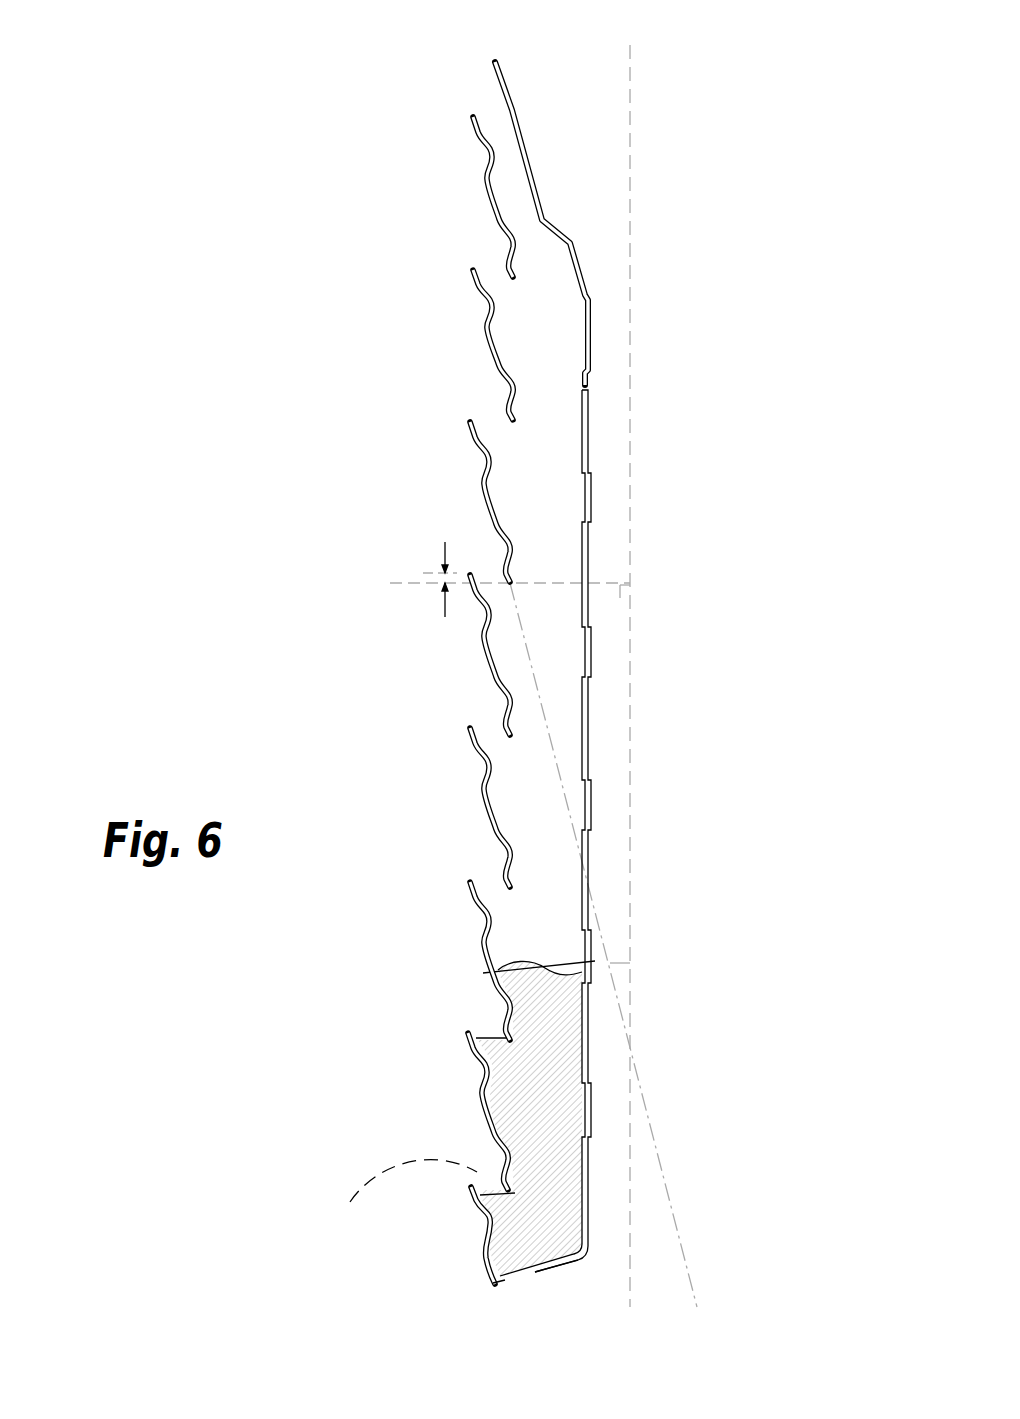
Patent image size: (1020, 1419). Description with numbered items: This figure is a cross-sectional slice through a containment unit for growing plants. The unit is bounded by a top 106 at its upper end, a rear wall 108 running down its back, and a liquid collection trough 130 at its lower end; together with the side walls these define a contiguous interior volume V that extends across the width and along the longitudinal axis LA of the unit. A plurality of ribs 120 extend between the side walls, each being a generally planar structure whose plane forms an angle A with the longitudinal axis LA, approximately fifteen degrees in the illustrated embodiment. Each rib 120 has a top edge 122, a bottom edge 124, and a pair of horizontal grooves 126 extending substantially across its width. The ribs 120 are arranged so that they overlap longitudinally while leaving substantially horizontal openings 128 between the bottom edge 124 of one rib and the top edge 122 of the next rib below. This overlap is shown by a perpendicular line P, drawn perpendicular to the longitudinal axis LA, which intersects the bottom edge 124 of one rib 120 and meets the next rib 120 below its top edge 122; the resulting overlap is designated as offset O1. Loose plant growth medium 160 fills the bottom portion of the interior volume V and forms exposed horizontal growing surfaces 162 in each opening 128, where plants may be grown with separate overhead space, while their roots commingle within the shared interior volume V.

The top 106 is at (483, 62).
The rear wall 108 is at (587, 575).
The ribs 120 is at (487, 198).
The top edge 122 is at (472, 272).
The bottom edge 124 is at (513, 278).
The horizontal grooves 126 is at (485, 157).
The openings 128 is at (492, 272).
The liquid collection trough 130 is at (556, 1272).
The loose plant growth medium 160 is at (555, 1182).
The exposed horizontal growing surfaces 162 is at (404, 1199).
The longitudinal axis LA is at (630, 85).
The interior volume V is at (540, 547).
The perpendicular line P is at (430, 585).
The offset O1 is at (443, 547).
The angle A is at (617, 963).